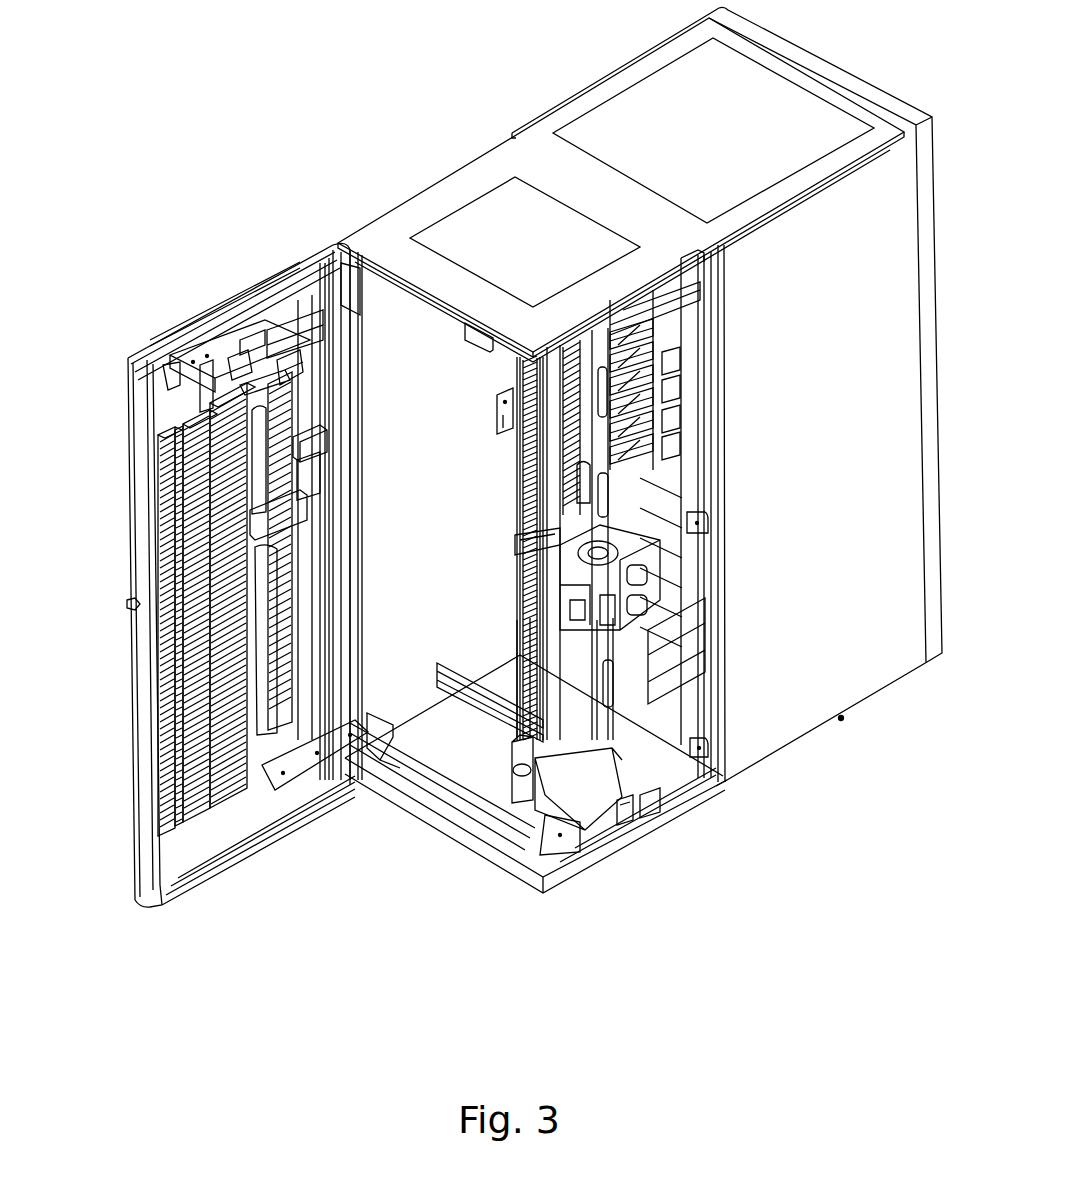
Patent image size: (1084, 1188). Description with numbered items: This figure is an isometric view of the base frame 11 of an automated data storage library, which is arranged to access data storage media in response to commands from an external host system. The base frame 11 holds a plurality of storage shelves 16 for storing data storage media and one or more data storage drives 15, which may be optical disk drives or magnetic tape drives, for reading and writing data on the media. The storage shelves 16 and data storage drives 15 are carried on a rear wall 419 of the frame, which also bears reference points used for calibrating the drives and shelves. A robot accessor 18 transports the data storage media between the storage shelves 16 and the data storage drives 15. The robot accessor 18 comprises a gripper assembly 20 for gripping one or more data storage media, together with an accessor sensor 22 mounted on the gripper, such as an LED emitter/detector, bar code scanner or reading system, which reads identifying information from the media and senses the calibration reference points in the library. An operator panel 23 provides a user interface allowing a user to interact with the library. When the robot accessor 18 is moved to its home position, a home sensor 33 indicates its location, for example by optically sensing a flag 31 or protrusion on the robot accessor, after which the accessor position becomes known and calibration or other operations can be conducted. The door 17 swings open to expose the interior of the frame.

The base frame 11 is at (267, 973).
The data storage drive 15 is at (672, 345).
The storage shelves 16 is at (513, 475).
The door 17 is at (142, 547).
The robot accessor 18 is at (583, 788).
The gripper assembly 20 is at (667, 570).
The accessor sensor 22 is at (555, 603).
The operator panel 23 is at (310, 377).
The flag 31 is at (657, 797).
The home sensor 33 is at (633, 803).
The rear wall 419 is at (513, 392).